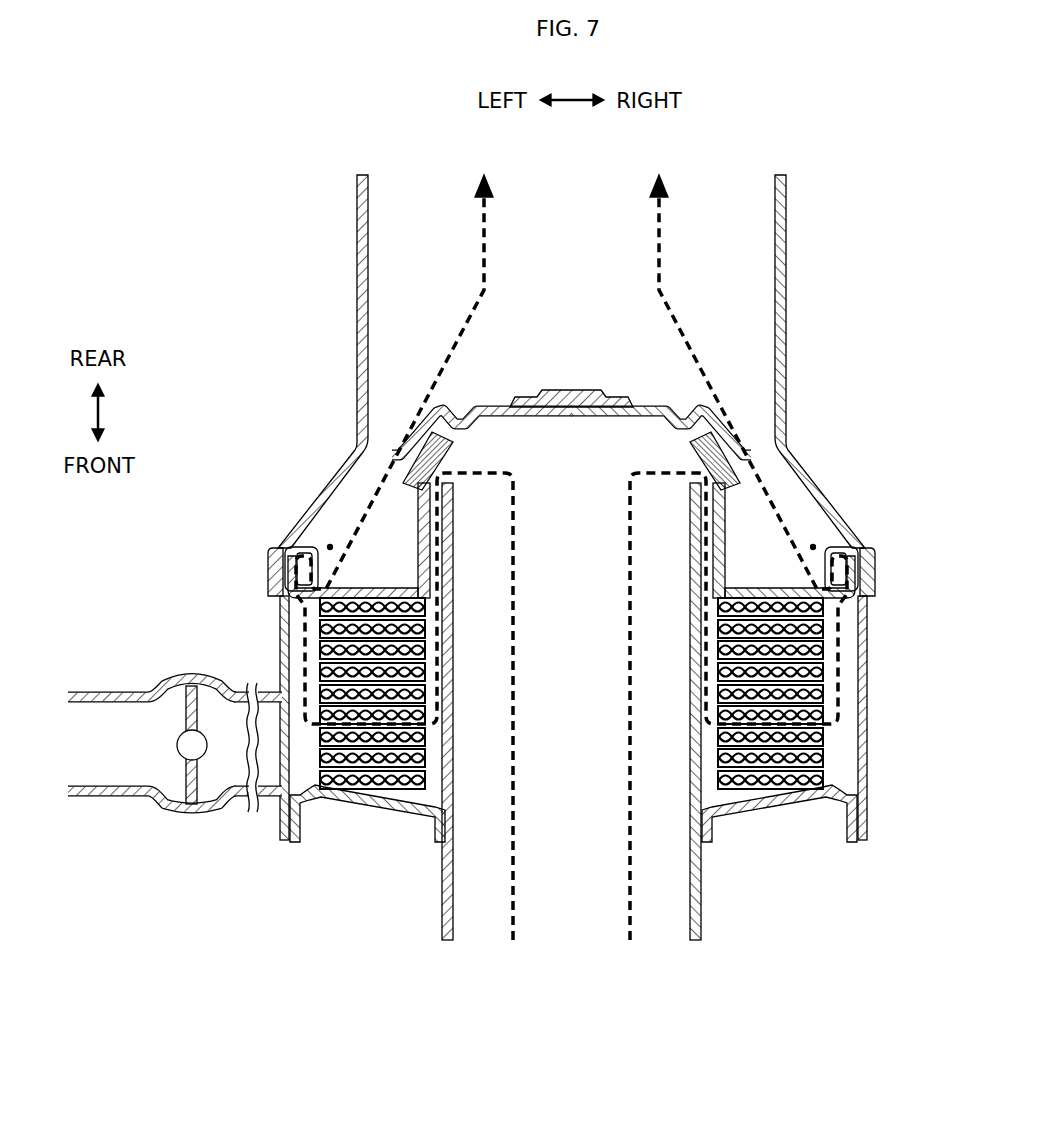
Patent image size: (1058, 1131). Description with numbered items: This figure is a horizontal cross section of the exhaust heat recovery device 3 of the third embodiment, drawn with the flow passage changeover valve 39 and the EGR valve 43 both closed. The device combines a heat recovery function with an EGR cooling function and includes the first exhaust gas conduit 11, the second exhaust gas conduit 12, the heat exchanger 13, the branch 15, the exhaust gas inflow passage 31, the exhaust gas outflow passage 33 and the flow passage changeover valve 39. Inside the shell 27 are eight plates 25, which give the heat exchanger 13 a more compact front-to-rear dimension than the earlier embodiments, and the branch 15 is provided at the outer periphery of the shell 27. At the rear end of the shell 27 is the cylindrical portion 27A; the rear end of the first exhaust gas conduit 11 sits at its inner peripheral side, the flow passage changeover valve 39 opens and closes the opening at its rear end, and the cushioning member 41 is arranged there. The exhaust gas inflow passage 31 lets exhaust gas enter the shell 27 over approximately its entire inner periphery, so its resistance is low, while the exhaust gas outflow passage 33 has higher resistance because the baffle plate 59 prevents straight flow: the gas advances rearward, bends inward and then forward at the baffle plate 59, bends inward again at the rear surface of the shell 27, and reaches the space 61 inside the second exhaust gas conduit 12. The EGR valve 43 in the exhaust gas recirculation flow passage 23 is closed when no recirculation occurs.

The exhaust heat recovery device 3 is at (300, 373).
The first exhaust gas conduit 11 is at (702, 909).
The second exhaust gas conduit 12 is at (781, 209).
The heat exchanger 13 is at (862, 713).
The branch 15 is at (270, 692).
The exhaust gas recirculation flow passage 23 is at (88, 692).
The plate 25 is at (767, 790).
The shell 27 is at (601, 698).
The cylindrical portion 27A is at (722, 562).
The exhaust gas inflow passage 31 is at (426, 546).
The exhaust gas outflow passage 33 is at (270, 553).
The flow passage changeover valve 39 is at (638, 412).
The cushioning member 41 is at (442, 428).
The EGR valve 43 is at (197, 809).
The baffle plate 59 is at (298, 547).
The space 61 is at (330, 545).